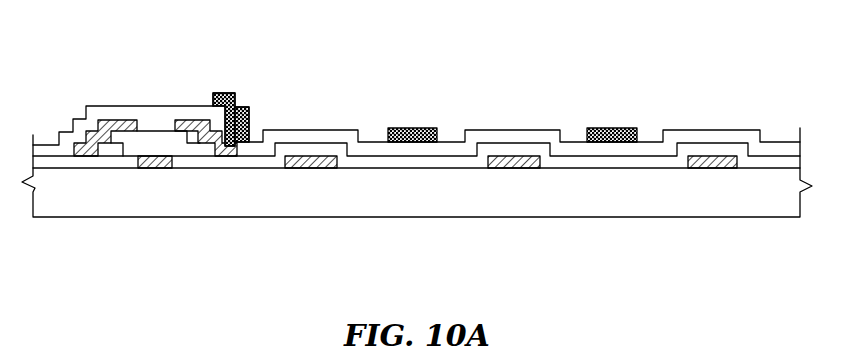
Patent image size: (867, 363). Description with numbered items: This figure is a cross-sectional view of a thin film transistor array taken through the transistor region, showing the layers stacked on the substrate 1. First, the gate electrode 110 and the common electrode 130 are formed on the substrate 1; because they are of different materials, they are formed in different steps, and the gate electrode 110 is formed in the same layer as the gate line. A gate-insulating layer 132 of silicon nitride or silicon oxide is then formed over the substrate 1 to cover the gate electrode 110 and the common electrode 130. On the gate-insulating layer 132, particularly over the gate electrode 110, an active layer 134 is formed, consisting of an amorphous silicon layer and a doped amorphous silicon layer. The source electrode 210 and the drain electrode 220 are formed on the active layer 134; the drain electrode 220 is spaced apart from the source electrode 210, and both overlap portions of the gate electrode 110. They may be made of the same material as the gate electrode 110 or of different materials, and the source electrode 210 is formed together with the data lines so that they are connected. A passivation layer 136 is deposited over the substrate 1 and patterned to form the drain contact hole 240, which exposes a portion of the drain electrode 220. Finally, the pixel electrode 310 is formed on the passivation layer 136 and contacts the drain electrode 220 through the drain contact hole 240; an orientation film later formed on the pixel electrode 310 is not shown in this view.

The substrate 1 is at (385, 199).
The gate electrode 110 is at (150, 169).
The common electrode 130 is at (311, 168).
The gate-insulating layer 132 is at (414, 160).
The active layer 134 is at (208, 152).
The passivation layer 136 is at (169, 117).
The source electrode 210 is at (126, 119).
The drain electrode 220 is at (235, 157).
The drain contact hole 240 is at (235, 113).
The pixel electrode 310 is at (251, 114).